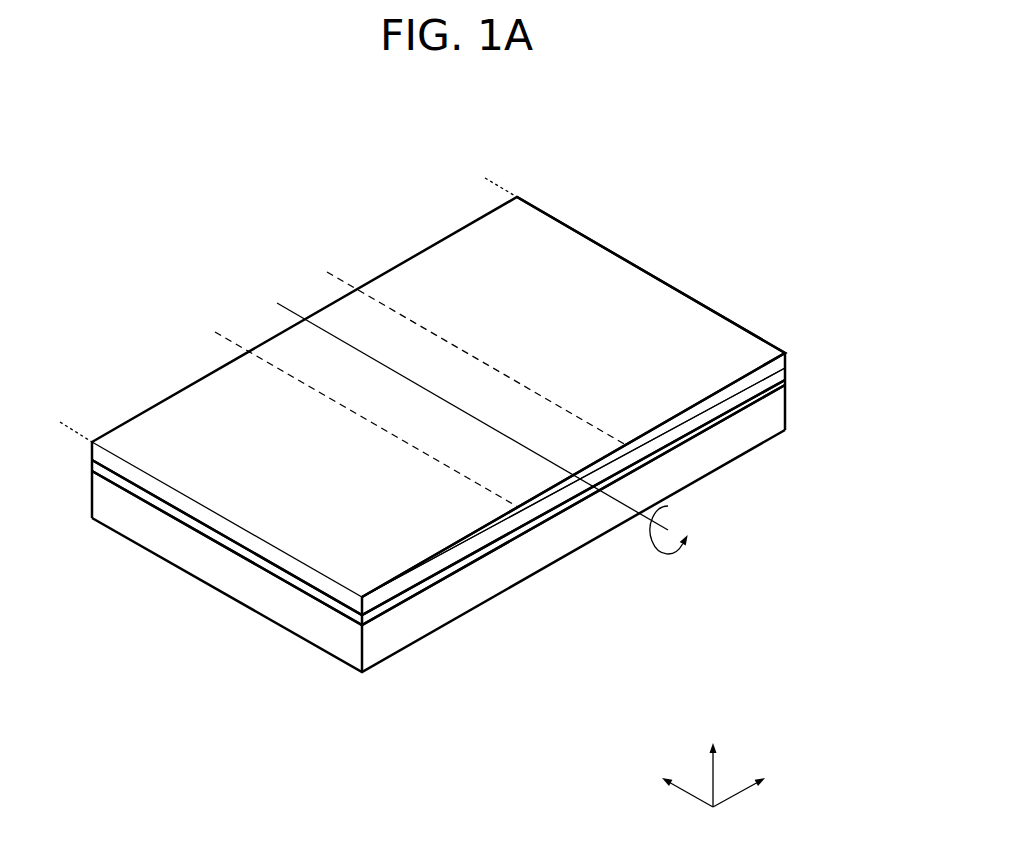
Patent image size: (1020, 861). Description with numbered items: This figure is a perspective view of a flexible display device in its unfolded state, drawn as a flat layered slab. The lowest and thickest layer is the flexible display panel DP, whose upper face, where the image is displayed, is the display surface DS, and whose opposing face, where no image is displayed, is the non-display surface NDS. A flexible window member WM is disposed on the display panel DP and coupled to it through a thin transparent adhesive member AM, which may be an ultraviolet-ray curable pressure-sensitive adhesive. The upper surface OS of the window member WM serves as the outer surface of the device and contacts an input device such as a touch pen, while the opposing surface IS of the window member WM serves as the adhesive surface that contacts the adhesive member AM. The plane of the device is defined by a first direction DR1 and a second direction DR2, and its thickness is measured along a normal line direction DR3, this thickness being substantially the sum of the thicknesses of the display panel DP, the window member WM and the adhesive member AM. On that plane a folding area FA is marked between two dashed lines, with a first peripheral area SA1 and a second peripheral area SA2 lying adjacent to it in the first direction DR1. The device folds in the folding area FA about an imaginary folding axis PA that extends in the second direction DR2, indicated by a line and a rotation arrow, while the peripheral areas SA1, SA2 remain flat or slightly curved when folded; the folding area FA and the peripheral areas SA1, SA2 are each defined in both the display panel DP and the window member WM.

The flexible display panel DP is at (283, 601).
The flexible window member WM is at (217, 525).
The transparent adhesive member AM is at (253, 557).
The outer surface OS is at (733, 390).
The adhesive surface IS is at (748, 398).
The display surface DS is at (774, 402).
The non-display surface NDS is at (773, 437).
The folding area FA is at (327, 272).
The first peripheral area SA1 is at (215, 332).
The second peripheral area SA2 is at (485, 178).
The folding axis PA is at (640, 510).
The first direction DR1 is at (755, 785).
The second direction DR2 is at (670, 785).
The normal line direction DR3 is at (712, 764).